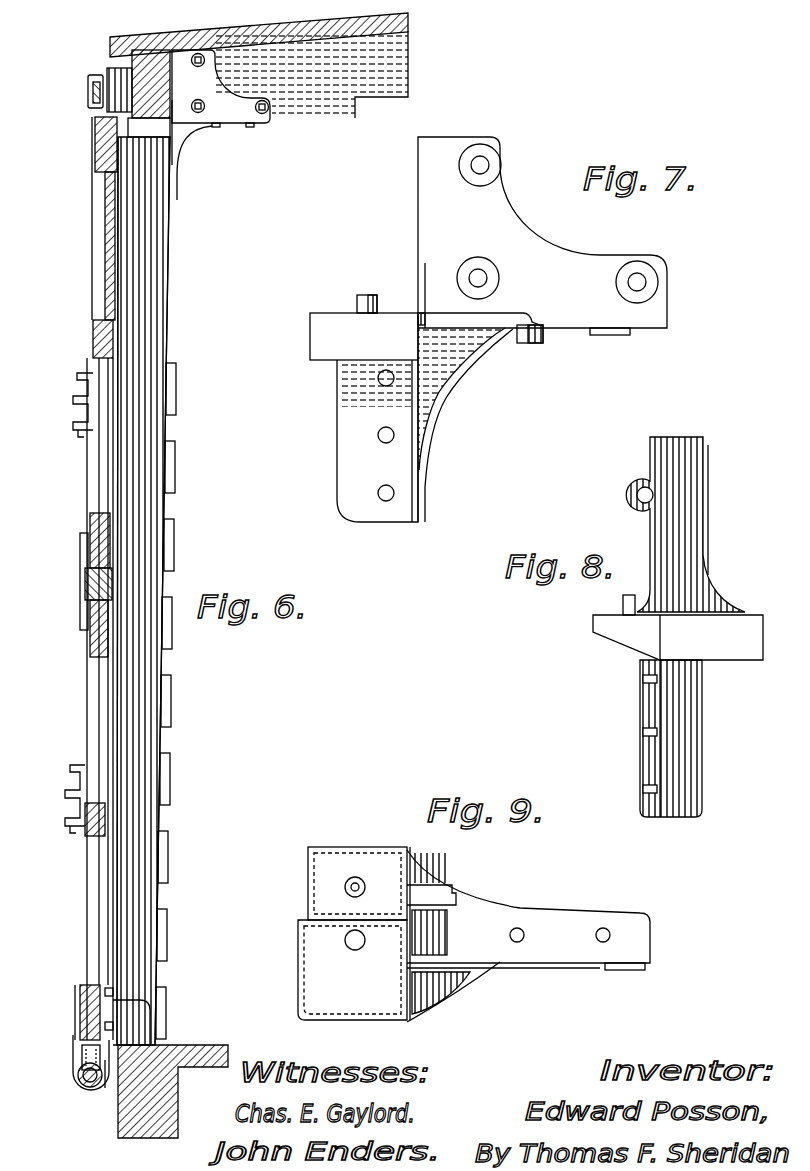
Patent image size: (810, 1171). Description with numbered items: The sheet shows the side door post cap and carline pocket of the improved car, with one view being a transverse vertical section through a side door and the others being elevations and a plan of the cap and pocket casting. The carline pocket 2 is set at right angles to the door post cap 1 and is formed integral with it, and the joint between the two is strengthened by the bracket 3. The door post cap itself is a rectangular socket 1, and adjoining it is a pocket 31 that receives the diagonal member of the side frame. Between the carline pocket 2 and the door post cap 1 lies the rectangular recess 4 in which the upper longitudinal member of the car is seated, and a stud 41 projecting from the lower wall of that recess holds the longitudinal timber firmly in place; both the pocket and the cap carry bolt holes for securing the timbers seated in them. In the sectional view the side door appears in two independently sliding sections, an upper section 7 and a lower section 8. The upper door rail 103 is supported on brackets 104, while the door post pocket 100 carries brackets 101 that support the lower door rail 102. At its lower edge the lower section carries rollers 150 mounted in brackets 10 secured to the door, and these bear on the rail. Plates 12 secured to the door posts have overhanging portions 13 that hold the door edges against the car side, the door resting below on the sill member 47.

In FIG. 6, the door post cap 1 is at (156, 136).
In FIG. 7, the door post cap 1 is at (362, 427).
In FIG. 8, the door post cap 1 is at (632, 726).
In FIG. 9, the door post cap 1 is at (298, 982).
In FIG. 6, the carline pocket 2 is at (221, 88).
In FIG. 7, the carline pocket 2 is at (542, 236).
In FIG. 8, the carline pocket 2 is at (685, 524).
In FIG. 9, the carline pocket 2 is at (556, 952).
In FIG. 6, the bracket 3 is at (192, 150).
In FIG. 7, the bracket 3 is at (465, 425).
In FIG. 9, the bracket 3 is at (453, 934).
In FIG. 7, the rectangular recess 4 is at (426, 294).
In FIG. 6, the upper door section 7 is at (92, 295).
In FIG. 6, the lower door section 8 is at (85, 855).
In FIG. 6, the roller brackets 10 is at (92, 112).
In FIG. 6, the plates 12 is at (85, 578).
In FIG. 6, the overhanging portions 13 is at (87, 535).
In FIG. 8, the pocket for diagonal member 31 is at (678, 637).
In FIG. 9, the pocket for diagonal member 31 is at (307, 887).
In FIG. 7, the stud 41 is at (357, 302).
In FIG. 8, the stud 41 is at (620, 602).
In FIG. 9, the stud 41 is at (358, 872).
In FIG. 6, the base sill 47 is at (155, 1058).
In FIG. 6, the door post pocket 100 is at (130, 1016).
In FIG. 6, the brackets 101 is at (110, 1085).
In FIG. 6, the lower door rail 102 is at (78, 1077).
In FIG. 6, the upper door rail 103 is at (88, 82).
In FIG. 6, the brackets 104 is at (108, 68).
In FIG. 6, the rollers 150 is at (82, 1050).